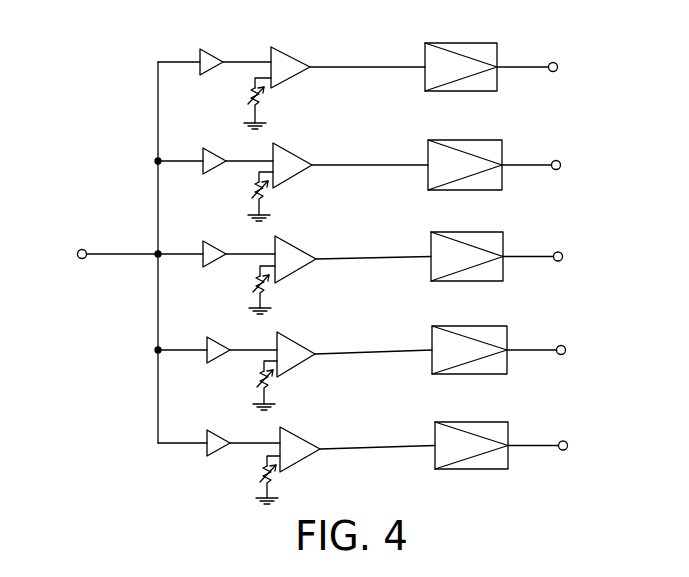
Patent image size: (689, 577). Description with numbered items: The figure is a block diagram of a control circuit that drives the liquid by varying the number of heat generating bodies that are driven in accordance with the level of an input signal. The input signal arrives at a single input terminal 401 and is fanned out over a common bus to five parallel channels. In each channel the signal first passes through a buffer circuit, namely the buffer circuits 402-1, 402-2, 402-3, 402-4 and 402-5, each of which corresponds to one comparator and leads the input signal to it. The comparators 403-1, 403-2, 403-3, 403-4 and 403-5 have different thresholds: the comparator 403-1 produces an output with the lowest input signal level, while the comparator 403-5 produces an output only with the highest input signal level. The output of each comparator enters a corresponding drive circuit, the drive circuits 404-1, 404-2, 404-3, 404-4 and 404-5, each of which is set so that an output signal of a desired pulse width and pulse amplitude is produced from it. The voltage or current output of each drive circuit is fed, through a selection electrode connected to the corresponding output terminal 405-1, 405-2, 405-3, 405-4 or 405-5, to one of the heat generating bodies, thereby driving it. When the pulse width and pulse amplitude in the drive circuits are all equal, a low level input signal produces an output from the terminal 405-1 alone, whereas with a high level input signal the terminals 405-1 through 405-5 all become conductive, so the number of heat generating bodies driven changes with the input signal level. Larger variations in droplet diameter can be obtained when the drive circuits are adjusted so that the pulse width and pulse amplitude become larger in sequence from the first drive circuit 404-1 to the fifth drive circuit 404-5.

The input terminal 401 is at (78, 250).
The buffer circuit 402-5 is at (212, 41).
The comparator 403-5 is at (289, 54).
The drive circuit 404-5 is at (448, 43).
The output terminal 405-5 is at (556, 59).
The buffer circuit 402-4 is at (213, 139).
The comparator 403-4 is at (290, 151).
The drive circuit 404-4 is at (450, 140).
The output terminal 405-4 is at (559, 157).
The buffer circuit 402-3 is at (218, 231).
The comparator 403-3 is at (291, 244).
The drive circuit 404-3 is at (448, 232).
The output terminal 405-3 is at (560, 249).
The buffer circuit 402-2 is at (218, 328).
The comparator 403-2 is at (296, 340).
The drive circuit 404-2 is at (450, 326).
The output terminal 405-2 is at (564, 345).
The buffer circuit 402-1 is at (220, 420).
The comparator 403-1 is at (302, 437).
The drive circuit 404-1 is at (458, 422).
The output terminal 405-1 is at (566, 438).